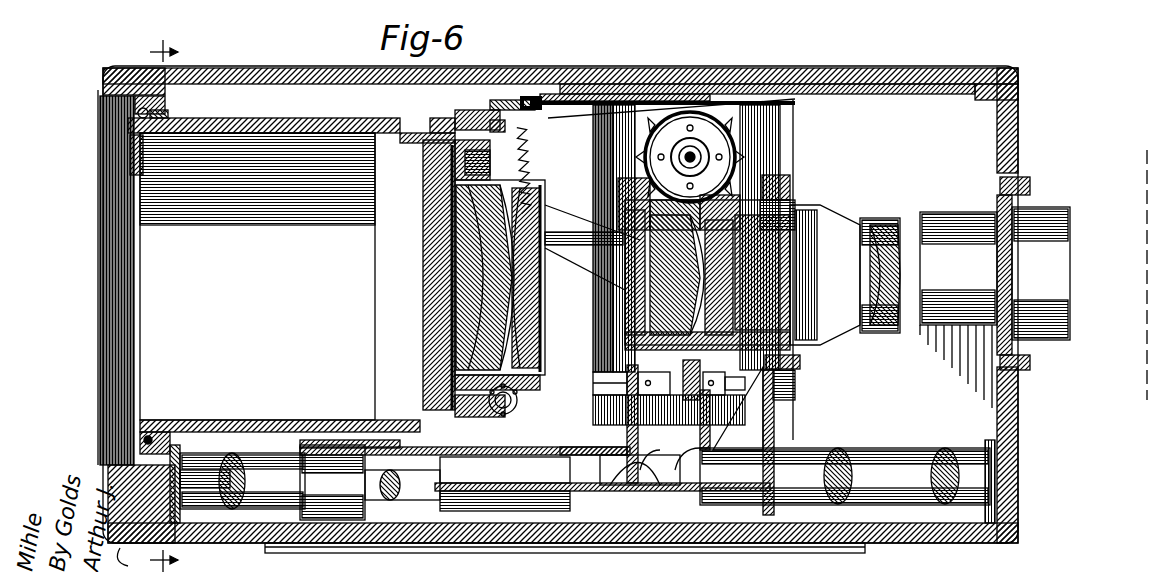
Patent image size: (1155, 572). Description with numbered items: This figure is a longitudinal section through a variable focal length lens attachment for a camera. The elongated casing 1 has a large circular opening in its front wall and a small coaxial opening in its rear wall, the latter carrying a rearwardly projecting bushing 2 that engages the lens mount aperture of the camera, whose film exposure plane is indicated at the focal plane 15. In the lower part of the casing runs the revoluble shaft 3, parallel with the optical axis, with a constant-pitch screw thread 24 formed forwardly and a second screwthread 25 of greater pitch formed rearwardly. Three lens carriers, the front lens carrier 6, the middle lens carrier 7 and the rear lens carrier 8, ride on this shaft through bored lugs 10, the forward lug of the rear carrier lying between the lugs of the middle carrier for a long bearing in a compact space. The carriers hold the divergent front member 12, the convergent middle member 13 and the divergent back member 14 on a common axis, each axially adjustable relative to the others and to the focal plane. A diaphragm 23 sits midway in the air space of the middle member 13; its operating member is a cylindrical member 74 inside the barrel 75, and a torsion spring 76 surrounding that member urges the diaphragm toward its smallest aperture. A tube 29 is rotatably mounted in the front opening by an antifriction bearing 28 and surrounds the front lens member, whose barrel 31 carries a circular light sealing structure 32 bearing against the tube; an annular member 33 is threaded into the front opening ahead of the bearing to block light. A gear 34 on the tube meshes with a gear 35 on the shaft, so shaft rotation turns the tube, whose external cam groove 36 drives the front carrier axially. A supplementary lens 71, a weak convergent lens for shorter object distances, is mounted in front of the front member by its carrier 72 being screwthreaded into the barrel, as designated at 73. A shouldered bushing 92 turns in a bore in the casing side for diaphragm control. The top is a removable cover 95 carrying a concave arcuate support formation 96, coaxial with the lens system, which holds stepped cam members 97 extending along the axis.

The casing 1 is at (1018, 120).
The bushing 2 is at (1060, 292).
The revoluble shaft 3 is at (915, 456).
The front lens carrier 6 is at (480, 140).
The middle lens carrier 7 is at (350, 440).
The rear lens carrier 8 is at (815, 422).
The bored lugs 10 is at (330, 446).
The divergent front member 12 is at (485, 258).
The convergent middle member 13 is at (660, 278).
The divergent back member 14 is at (895, 262).
The focal plane 15 is at (1142, 262).
The diaphragm 23 is at (740, 270).
The screw thread 24 is at (240, 446).
The second screwthread 25 is at (855, 456).
The antifriction bearing 28 is at (130, 118).
The tube 29 is at (252, 126).
The barrel 31 is at (530, 180).
The light sealing structure 32 is at (429, 387).
The annular member 33 is at (133, 98).
The gear 34 is at (176, 432).
The gear 35 is at (195, 440).
The cam groove 36 is at (470, 130).
The supplementary lens 71 is at (434, 285).
The carrier 72 is at (419, 380).
The screwthreaded connection 73 is at (430, 152).
The cylindrical member 74 is at (650, 207).
The barrel 75 is at (615, 196).
The torsion spring 76 is at (740, 172).
The shouldered bushing 92 is at (735, 142).
The removable cover 95 is at (894, 88).
The concave arcuate support formation 96 is at (690, 100).
The cam members 97 is at (633, 106).